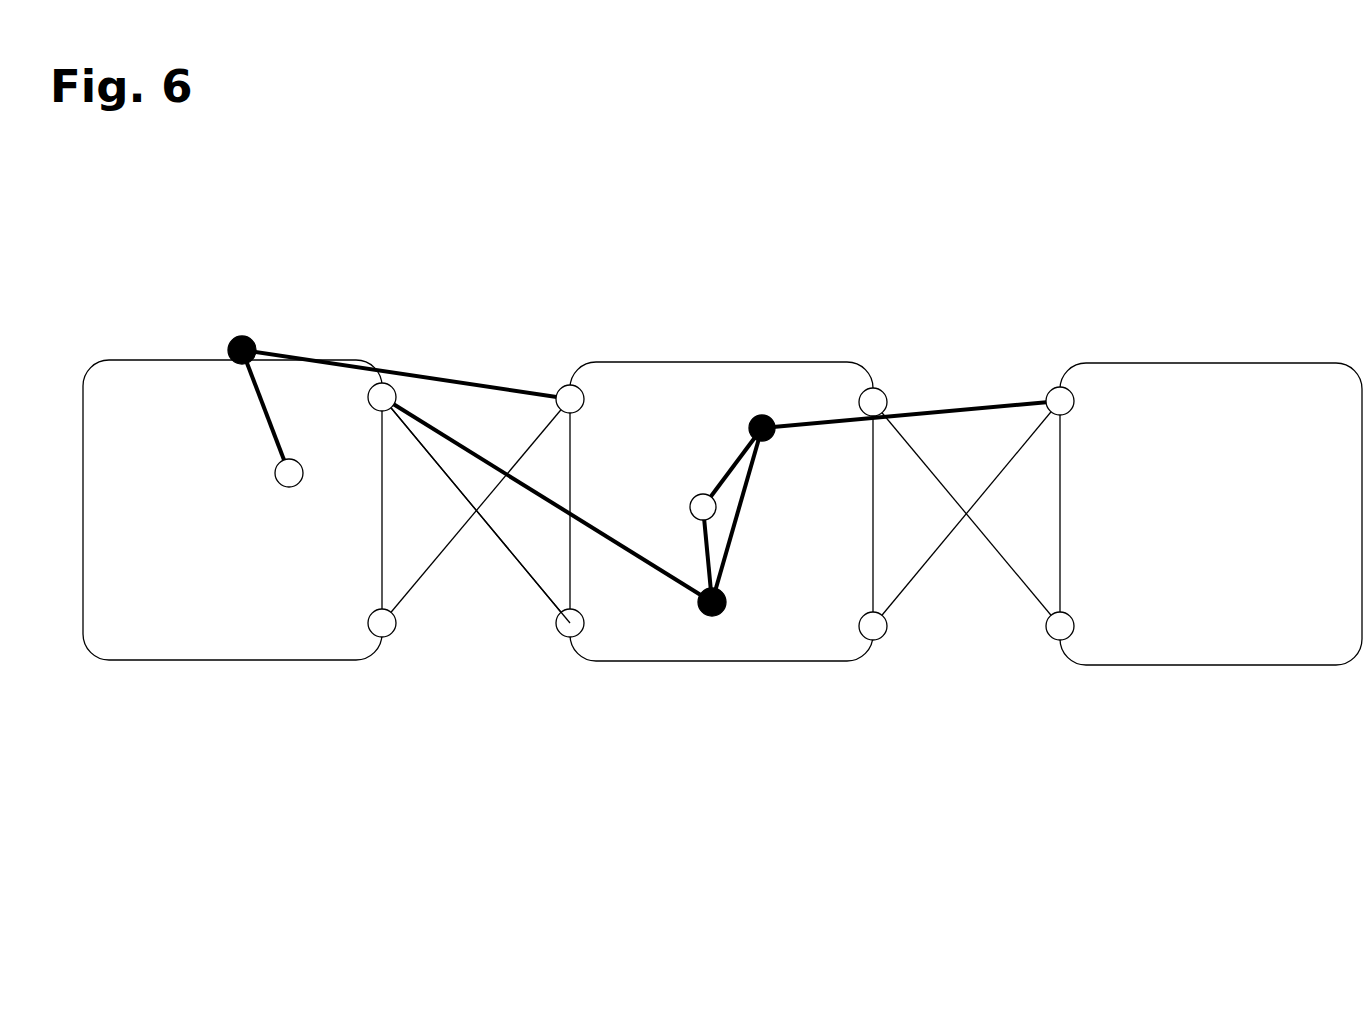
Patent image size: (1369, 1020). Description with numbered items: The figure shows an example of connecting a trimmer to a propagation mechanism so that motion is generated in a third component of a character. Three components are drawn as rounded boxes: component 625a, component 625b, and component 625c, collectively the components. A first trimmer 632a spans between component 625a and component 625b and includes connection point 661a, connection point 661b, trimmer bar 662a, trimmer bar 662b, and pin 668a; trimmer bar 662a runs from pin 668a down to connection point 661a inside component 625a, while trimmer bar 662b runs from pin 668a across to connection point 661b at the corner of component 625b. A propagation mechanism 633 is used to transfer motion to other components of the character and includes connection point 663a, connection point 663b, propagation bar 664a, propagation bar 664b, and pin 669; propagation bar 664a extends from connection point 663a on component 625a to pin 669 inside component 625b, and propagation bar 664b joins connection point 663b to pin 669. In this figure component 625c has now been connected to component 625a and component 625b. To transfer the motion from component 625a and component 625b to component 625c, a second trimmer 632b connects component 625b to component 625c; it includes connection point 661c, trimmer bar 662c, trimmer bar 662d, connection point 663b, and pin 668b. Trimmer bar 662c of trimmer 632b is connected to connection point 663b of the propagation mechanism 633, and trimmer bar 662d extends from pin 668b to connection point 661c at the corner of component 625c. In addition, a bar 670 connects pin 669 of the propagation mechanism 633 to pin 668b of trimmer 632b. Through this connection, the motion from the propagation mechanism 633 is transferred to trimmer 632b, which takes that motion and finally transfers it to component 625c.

The component 625a is at (262, 649).
The component 625b is at (749, 647).
The component 625c is at (1240, 652).
The trimmer 632a is at (572, 312).
The trimmer 632b is at (1000, 305).
The propagation mechanism 633 is at (538, 542).
The connection point 661a is at (277, 487).
The connection point 661b is at (583, 383).
The connection point 661c is at (1045, 395).
The trimmer bar 662a is at (252, 408).
The trimmer bar 662b is at (445, 373).
The trimmer bar 662c is at (732, 457).
The trimmer bar 662d is at (967, 402).
The connection point 663a is at (367, 412).
The connection point 663b is at (685, 493).
The propagation bar 664a is at (647, 577).
The propagation bar 664b is at (700, 558).
The pin 668a is at (253, 335).
The pin 668b is at (775, 447).
The pin 669 is at (728, 606).
The bar 670 is at (748, 518).